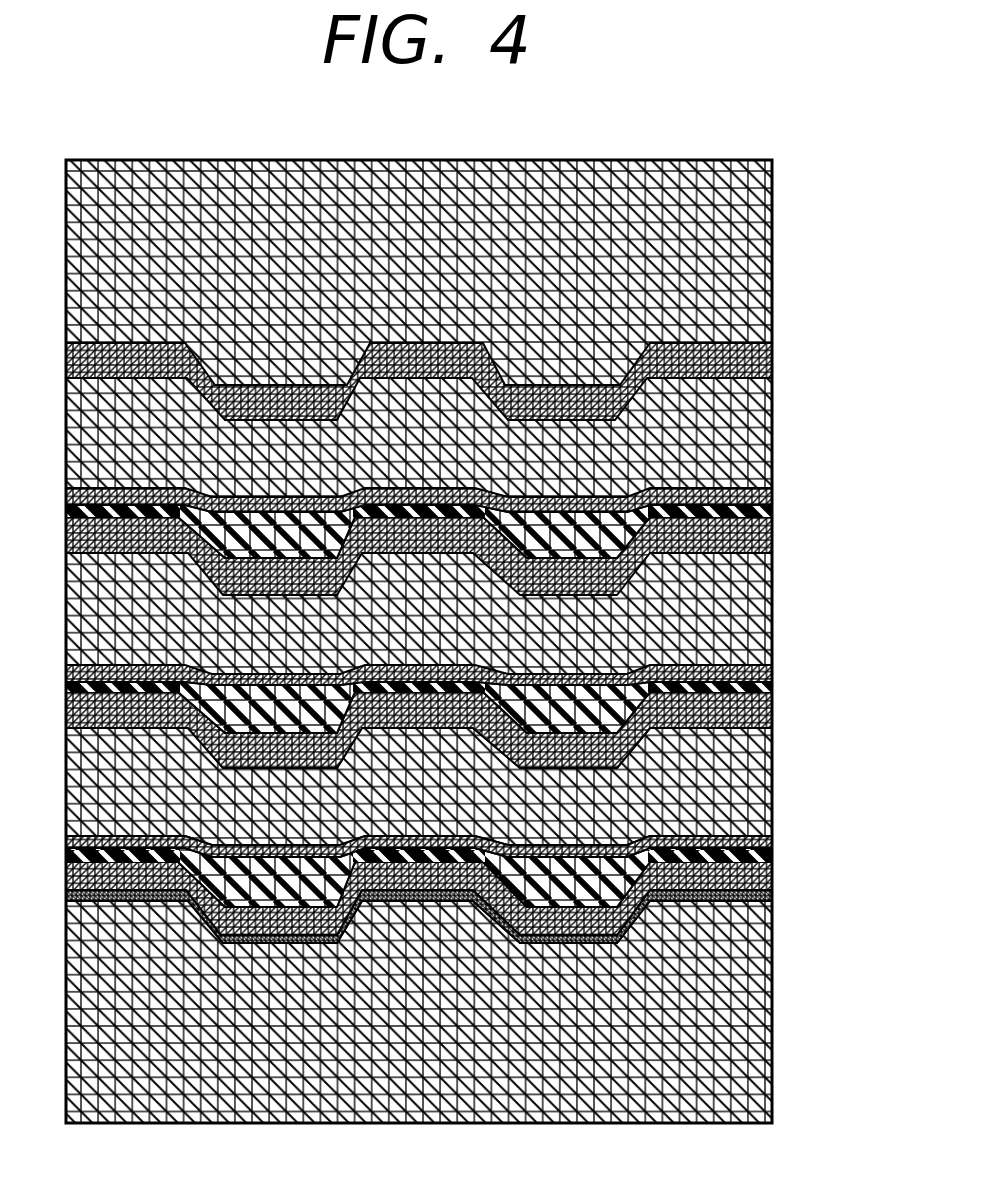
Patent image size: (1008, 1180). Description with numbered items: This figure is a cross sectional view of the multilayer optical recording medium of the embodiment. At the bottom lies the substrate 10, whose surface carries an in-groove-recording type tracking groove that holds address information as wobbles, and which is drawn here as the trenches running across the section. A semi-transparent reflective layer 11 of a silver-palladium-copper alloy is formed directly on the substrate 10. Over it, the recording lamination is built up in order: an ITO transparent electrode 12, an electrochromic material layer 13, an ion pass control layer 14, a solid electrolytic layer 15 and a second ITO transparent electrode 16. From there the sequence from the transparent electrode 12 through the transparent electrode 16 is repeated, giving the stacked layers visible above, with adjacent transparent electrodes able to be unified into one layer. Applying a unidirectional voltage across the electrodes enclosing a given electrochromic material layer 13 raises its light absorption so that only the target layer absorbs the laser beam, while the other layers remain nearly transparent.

The substrate 10 is at (752, 1077).
The semi-transparent reflective layer 11 is at (770, 893).
The ITO transparent electrode 12 is at (770, 875).
The electrochromic material layer 13 is at (770, 853).
The ion pass control layer 14 is at (770, 840).
The solid electrolytic layer 15 is at (757, 752).
The ITO transparent electrode 16 is at (770, 714).